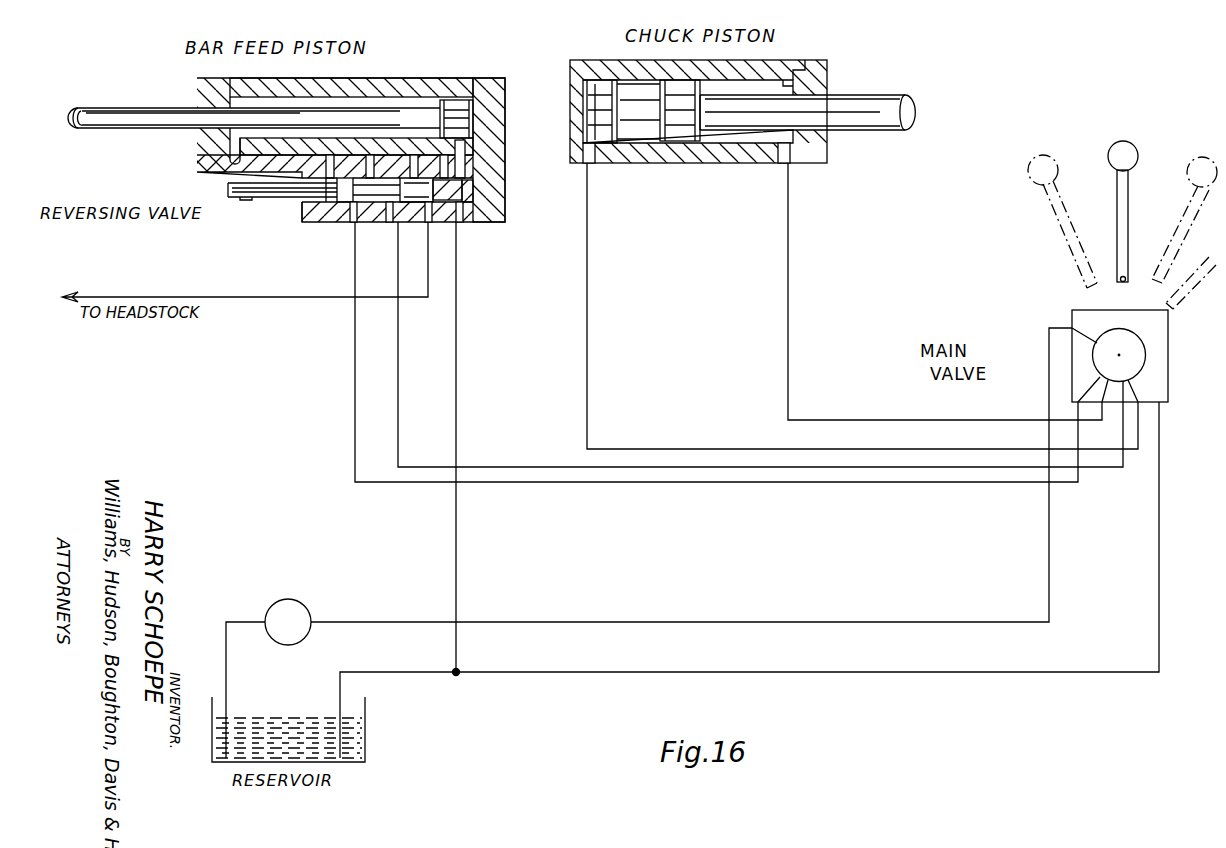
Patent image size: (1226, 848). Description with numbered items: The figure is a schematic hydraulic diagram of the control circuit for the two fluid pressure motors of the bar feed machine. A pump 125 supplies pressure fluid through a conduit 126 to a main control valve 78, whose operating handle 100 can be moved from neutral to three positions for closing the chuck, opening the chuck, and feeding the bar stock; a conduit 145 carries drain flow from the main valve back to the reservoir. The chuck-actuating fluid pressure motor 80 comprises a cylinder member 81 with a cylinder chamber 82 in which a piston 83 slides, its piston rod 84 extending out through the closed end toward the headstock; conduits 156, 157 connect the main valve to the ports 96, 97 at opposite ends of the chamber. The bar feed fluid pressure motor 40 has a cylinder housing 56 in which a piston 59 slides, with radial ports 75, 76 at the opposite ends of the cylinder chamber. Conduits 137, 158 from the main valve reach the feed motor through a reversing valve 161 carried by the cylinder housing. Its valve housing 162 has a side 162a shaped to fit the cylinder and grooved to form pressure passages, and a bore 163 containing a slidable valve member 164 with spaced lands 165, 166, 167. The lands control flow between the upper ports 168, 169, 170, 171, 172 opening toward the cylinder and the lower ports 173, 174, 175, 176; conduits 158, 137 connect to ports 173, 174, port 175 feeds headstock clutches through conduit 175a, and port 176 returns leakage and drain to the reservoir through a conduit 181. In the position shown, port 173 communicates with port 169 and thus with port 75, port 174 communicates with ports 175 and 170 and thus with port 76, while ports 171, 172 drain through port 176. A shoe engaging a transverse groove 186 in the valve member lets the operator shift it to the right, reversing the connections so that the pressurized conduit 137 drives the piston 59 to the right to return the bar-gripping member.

The fluid pressure motor 40 is at (207, 78).
The cylinder housing 56 is at (386, 82).
The piston 59 is at (460, 100).
The radial port 75 is at (232, 152).
The radial port 76 is at (478, 142).
The side of valve housing 162a is at (466, 150).
The upper port 172 is at (496, 165).
The bore 163 is at (462, 190).
The valve housing 162 is at (490, 208).
The land 167 is at (468, 202).
The upper port 168 is at (328, 162).
The upper port 169 is at (369, 162).
The upper port 170 is at (413, 162).
The upper port 171 is at (444, 162).
The transverse groove 186 is at (246, 200).
The slidable valve member 164 is at (298, 196).
The reversing valve 161 is at (304, 222).
The land 165 is at (330, 214).
The lower port 173 is at (353, 222).
The lower port 174 is at (389, 222).
The lower port 175 is at (430, 222).
The lower port 176 is at (460, 215).
The land 166 is at (398, 191).
The conduit 175a is at (235, 297).
The fluid pressure motor 80 is at (730, 165).
The cylinder member 81 is at (802, 68).
The cylinder chamber 82 is at (796, 88).
The piston 83 is at (682, 137).
The piston rod 84 is at (870, 100).
The port 96 is at (590, 158).
The port 97 is at (781, 158).
The conduit 156 is at (588, 316).
The conduit 157 is at (789, 316).
The conduit 158 is at (356, 392).
The conduit 137 is at (399, 372).
The conduit 181 is at (457, 436).
The conduit 145 is at (1160, 562).
The conduit 126 is at (704, 622).
The main control valve 78 is at (1158, 351).
The operating handle 100 is at (1129, 208).
The pump 125 is at (305, 580).